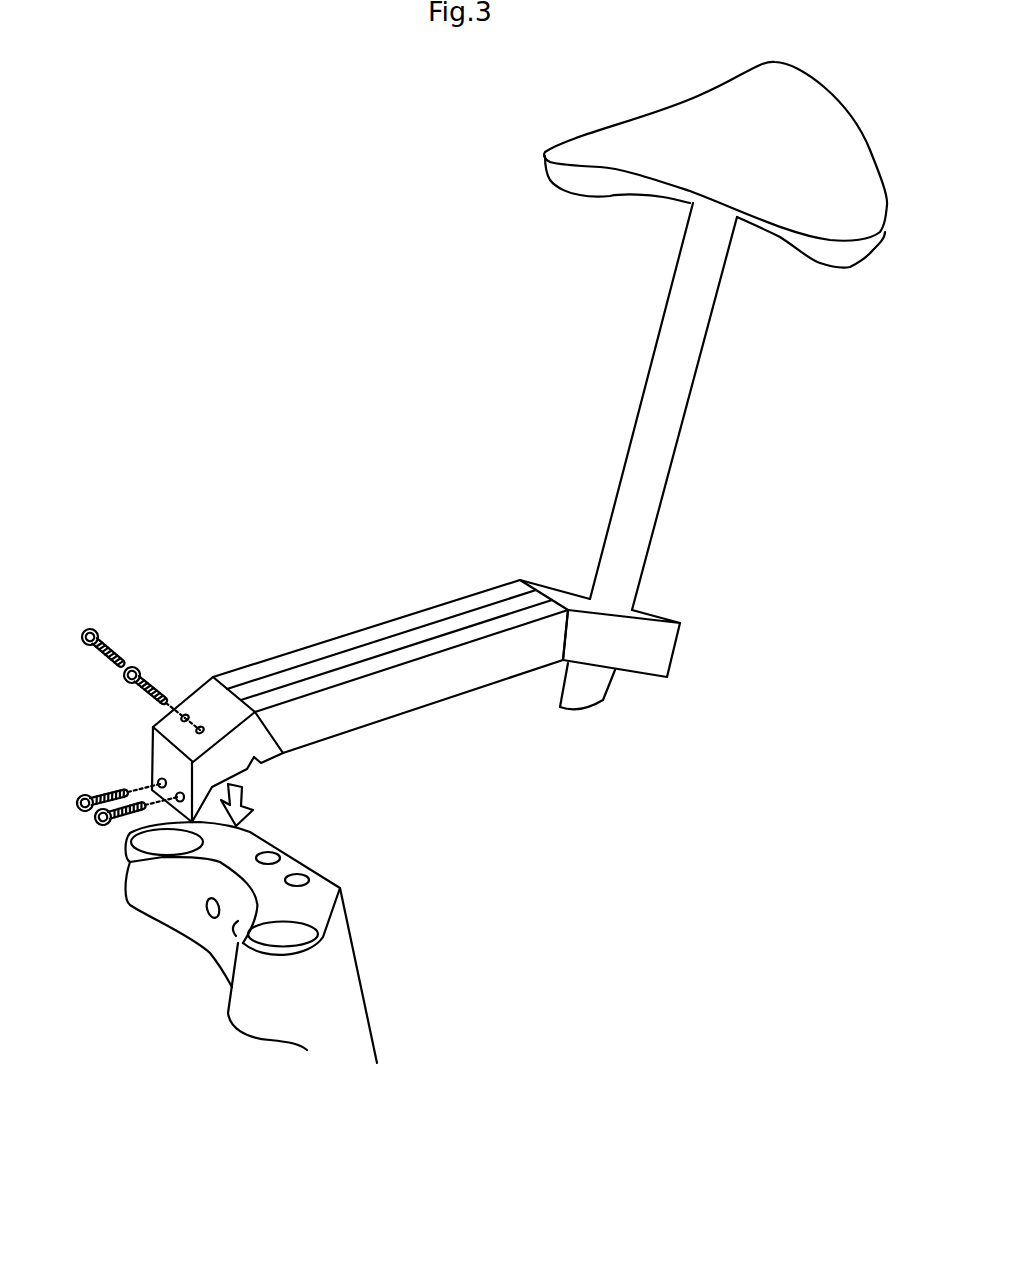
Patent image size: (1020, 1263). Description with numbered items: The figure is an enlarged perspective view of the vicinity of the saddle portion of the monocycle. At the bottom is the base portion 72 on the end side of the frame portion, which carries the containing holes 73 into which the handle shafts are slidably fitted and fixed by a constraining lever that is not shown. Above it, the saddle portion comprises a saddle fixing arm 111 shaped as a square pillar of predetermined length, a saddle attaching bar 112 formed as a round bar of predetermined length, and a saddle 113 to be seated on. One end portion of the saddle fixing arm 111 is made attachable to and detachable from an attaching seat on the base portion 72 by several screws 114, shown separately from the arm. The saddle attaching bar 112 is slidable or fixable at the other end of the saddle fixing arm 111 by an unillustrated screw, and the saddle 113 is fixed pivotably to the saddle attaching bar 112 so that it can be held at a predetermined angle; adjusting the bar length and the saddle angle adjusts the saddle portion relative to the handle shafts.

The base portion 72 is at (407, 928).
The containing holes 73 is at (322, 887).
The saddle fixing arm 111 is at (370, 632).
The saddle attaching bar 112 is at (657, 458).
The saddle 113 is at (838, 268).
The screws 114 is at (96, 625).